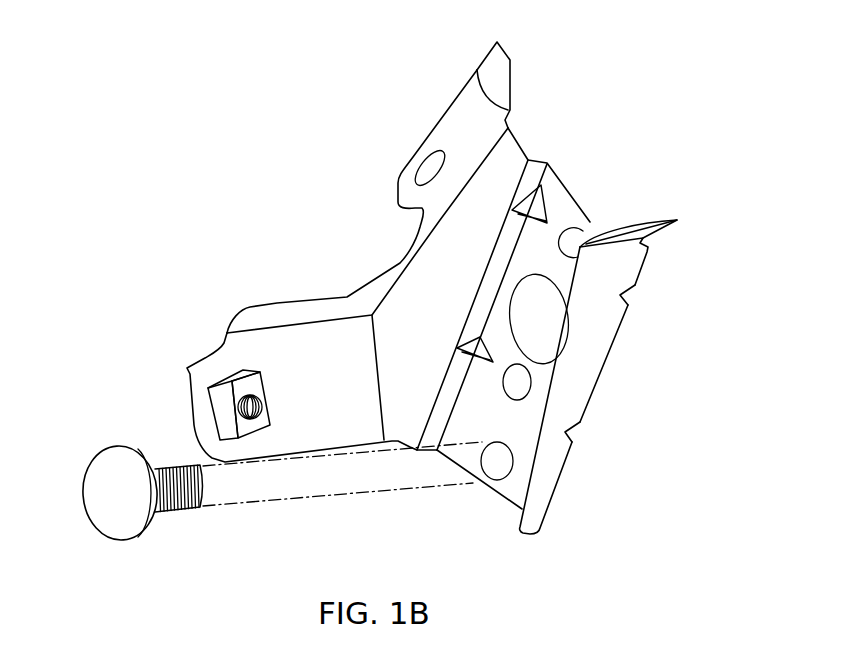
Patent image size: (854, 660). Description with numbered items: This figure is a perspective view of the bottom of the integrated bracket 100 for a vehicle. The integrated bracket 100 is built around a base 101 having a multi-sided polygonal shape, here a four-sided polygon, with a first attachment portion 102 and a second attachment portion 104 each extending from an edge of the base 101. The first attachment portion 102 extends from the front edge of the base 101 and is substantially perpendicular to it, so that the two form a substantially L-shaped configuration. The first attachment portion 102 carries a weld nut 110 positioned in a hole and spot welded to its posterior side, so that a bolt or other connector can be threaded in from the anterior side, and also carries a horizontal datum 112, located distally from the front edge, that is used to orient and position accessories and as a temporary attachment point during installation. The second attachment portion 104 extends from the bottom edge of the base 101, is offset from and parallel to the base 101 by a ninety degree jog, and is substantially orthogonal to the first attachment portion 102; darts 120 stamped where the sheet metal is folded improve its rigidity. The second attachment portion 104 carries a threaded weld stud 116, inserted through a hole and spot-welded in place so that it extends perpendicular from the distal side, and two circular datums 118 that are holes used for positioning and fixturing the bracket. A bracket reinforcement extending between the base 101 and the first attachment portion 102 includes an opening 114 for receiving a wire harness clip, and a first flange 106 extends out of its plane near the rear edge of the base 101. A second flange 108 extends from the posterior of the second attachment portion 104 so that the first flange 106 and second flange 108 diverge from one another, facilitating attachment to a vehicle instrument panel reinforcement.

The integrated bracket 100 is at (650, 97).
The base 101 is at (530, 130).
The first attachment portion 102 is at (265, 290).
The second attachment portion 104 is at (636, 385).
The first flange 106 is at (477, 70).
The second flange 108 is at (683, 219).
The weld nut 110 is at (268, 382).
The horizontal datum 112 is at (200, 360).
The opening 114 is at (418, 176).
The threaded weld stud 116 is at (95, 504).
The circular datum 118 is at (579, 237).
The dart 120 is at (538, 204).